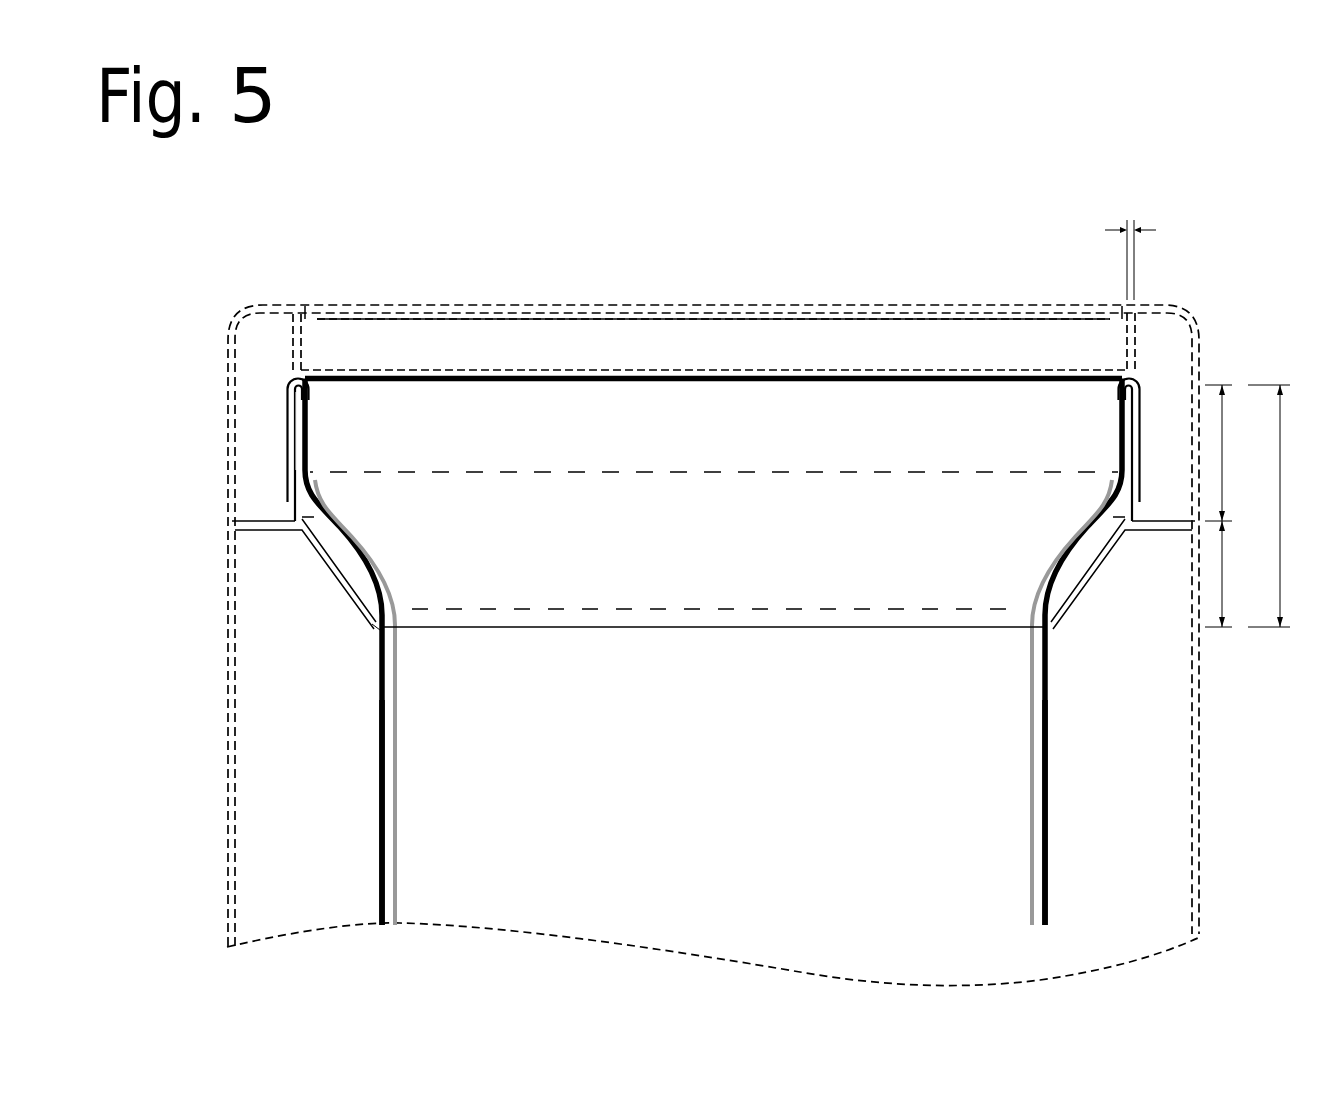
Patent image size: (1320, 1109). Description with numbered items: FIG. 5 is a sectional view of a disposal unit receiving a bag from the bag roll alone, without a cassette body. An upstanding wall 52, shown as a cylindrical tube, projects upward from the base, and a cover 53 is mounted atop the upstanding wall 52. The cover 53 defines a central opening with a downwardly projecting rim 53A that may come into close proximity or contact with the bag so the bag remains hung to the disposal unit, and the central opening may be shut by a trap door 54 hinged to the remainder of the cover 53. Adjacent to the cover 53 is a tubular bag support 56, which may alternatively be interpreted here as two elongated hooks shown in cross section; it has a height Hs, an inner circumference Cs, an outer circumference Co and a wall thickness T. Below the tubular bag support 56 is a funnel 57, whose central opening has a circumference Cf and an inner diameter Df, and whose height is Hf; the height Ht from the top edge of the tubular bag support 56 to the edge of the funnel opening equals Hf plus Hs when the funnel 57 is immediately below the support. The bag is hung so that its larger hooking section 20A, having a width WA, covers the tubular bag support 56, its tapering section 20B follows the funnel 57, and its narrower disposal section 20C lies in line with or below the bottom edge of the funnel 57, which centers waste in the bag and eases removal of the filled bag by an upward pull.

The upstanding wall 52 is at (1200, 780).
The cover 53 is at (272, 307).
The downwardly projecting rim 53A is at (287, 376).
The trap door 54 is at (610, 305).
The tubular bag support 56 is at (293, 435).
The funnel 57 is at (345, 585).
The larger hooking section 20A is at (713, 652).
The tapering section 20B is at (704, 572).
The narrower disposal section 20C is at (713, 812).
The inner diameter of funnel central opening Df is at (713, 640).
The inner circumference of tubular bag support Cs is at (310, 396).
The circumference of funnel central opening Cf is at (378, 628).
The outer circumference of tubular bag support Co is at (293, 513).
The width of larger hooking section WA is at (283, 406).
The wall thickness of tubular bag support T is at (1137, 260).
The height of tubular bag support Hs is at (1226, 453).
The height of funnel Hf is at (1225, 574).
The total height from bag support top edge to funnel opening Ht is at (1277, 506).